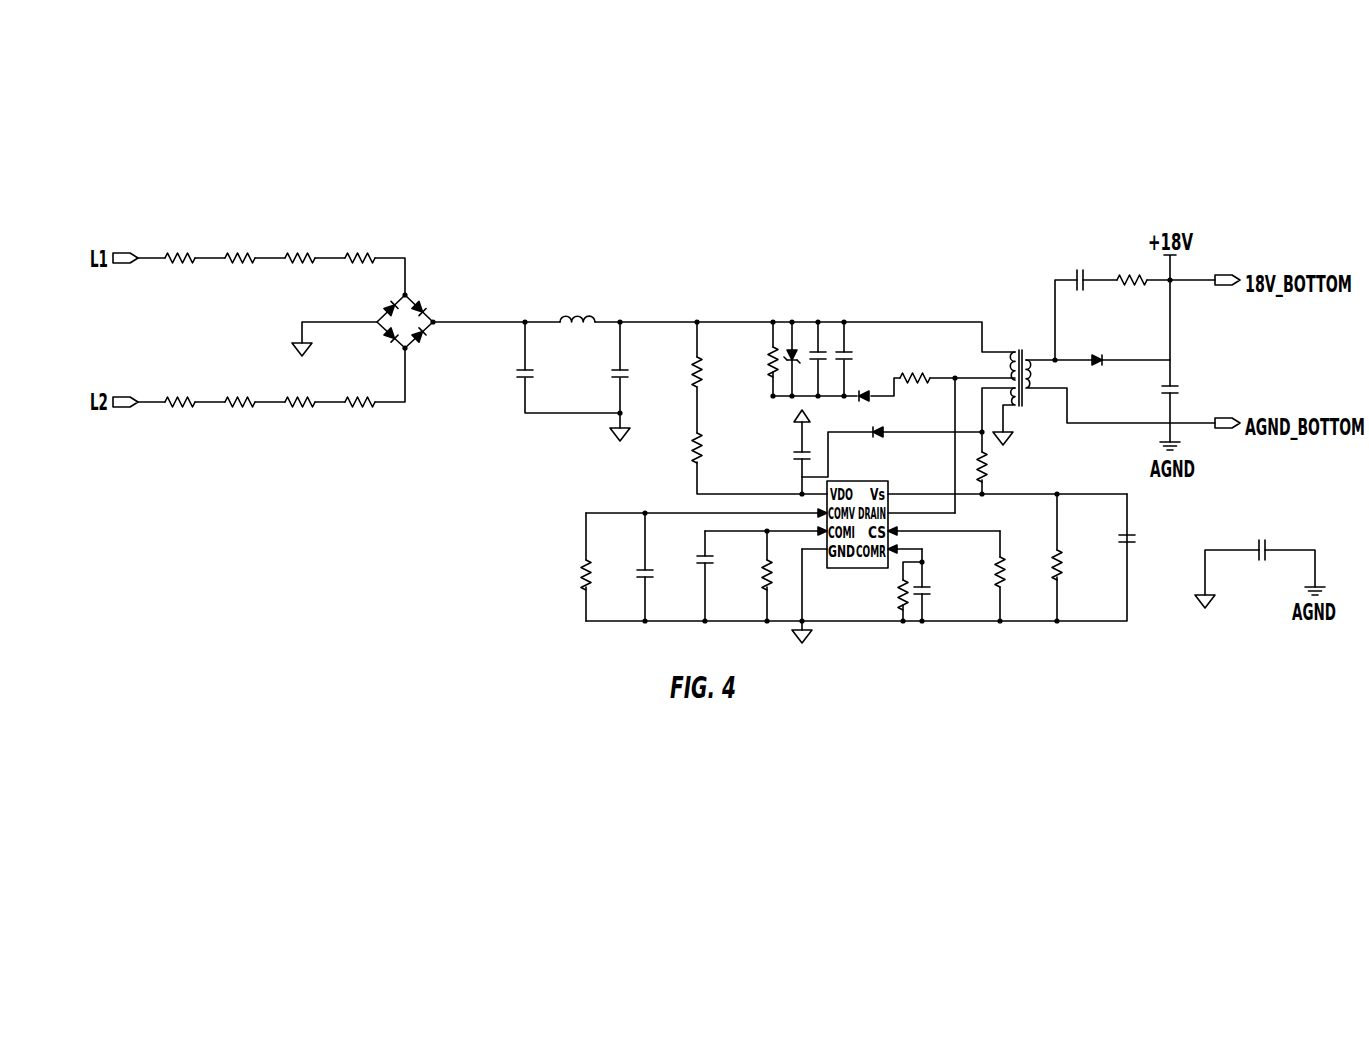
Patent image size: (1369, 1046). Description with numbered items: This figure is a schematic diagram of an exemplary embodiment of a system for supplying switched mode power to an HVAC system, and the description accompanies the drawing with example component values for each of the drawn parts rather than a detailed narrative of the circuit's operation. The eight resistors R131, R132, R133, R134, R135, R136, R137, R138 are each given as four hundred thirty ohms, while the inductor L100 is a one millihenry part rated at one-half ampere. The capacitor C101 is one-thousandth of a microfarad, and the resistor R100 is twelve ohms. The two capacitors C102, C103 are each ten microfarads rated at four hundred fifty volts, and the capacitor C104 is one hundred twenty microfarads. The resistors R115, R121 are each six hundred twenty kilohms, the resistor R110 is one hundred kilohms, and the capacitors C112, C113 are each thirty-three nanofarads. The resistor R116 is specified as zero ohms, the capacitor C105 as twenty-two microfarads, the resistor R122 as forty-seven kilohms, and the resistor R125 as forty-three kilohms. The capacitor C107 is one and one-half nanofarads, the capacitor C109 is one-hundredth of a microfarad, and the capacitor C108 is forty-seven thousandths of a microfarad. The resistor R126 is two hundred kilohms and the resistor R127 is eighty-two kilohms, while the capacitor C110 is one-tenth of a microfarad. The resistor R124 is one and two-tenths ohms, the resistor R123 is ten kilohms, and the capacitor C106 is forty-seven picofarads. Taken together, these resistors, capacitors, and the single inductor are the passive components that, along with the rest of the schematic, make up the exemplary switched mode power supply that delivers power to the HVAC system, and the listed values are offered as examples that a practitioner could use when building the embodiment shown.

The resistor R131 is at (178, 245).
The resistor R132 is at (238, 245).
The resistor R133 is at (298, 245).
The resistor R134 is at (362, 245).
The resistor R135 is at (178, 388).
The resistor R136 is at (238, 388).
The resistor R137 is at (298, 388).
The resistor R138 is at (362, 388).
The inductor L100 is at (591, 303).
The capacitor C102 is at (568, 367).
The capacitor C103 is at (641, 381).
The resistor R115 is at (719, 377).
The resistor R121 is at (759, 463).
The resistor R110 is at (791, 359).
The capacitor C112 is at (825, 359).
The capacitor C113 is at (853, 359).
The resistor R116 is at (943, 371).
The capacitor C105 is at (782, 452).
The resistor R122 is at (1003, 470).
The capacitor C101 is at (1076, 267).
The resistor R100 is at (1129, 266).
The capacitor C104 is at (1195, 384).
The resistor R125 is at (603, 567).
The capacitor C109 is at (662, 567).
The capacitor C108 is at (725, 576).
The resistor R126 is at (781, 576).
The resistor R127 is at (893, 591).
The capacitor C110 is at (939, 585).
The resistor R124 is at (1018, 576).
The resistor R123 is at (1074, 557).
The capacitor C106 is at (1144, 540).
The capacitor C107 is at (1260, 562).